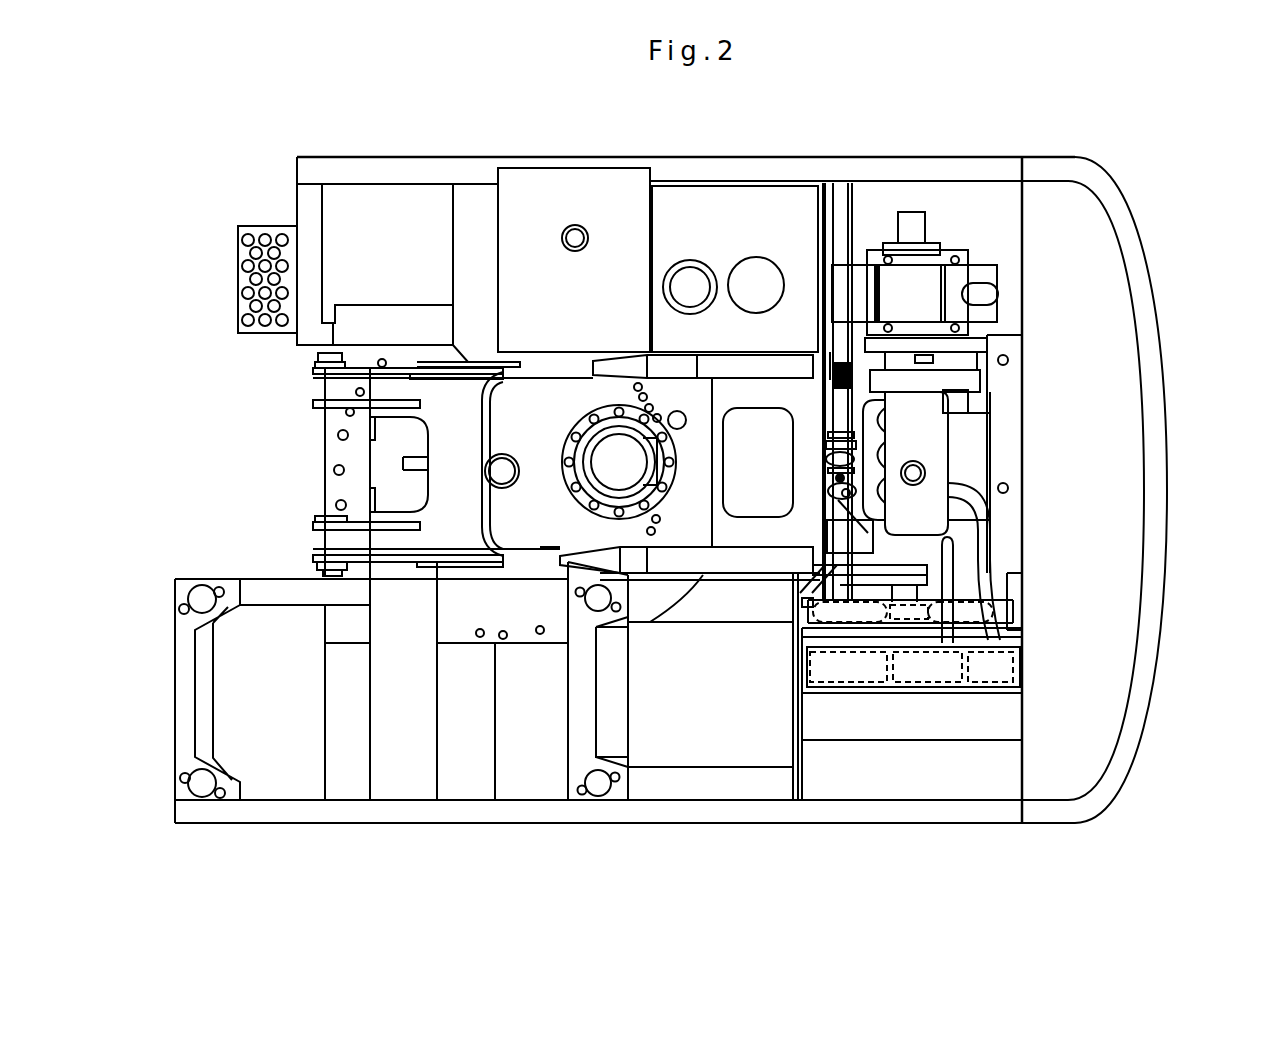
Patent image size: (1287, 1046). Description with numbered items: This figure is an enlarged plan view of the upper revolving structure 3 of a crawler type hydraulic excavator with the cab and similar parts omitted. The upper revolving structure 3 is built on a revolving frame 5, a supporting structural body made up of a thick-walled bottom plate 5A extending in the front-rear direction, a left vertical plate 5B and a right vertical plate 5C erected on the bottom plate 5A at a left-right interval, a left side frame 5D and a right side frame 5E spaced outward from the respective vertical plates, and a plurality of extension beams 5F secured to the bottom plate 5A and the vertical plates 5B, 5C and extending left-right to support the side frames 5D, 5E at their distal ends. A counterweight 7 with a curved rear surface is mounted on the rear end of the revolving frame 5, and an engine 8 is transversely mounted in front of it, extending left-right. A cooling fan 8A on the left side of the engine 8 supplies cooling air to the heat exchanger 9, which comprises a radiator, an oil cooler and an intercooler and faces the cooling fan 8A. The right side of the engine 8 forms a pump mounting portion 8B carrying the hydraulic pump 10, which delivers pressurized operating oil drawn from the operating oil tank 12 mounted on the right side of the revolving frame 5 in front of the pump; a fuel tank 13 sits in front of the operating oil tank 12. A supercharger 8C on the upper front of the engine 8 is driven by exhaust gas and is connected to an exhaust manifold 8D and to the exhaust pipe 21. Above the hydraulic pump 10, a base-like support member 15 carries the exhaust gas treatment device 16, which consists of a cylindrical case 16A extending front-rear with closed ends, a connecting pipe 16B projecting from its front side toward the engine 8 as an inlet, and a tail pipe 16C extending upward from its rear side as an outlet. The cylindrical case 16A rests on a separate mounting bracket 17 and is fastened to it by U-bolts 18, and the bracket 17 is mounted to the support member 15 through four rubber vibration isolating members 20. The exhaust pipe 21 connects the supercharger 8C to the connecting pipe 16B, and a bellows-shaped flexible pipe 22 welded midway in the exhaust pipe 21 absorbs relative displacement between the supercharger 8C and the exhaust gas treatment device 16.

The upper revolving structure 3 is at (644, 160).
The revolving frame 5 is at (540, 813).
The bottom plate 5A is at (362, 455).
The left vertical plate 5B is at (407, 556).
The right vertical plate 5C is at (407, 372).
The left side frame 5D is at (670, 813).
The right side frame 5E is at (483, 170).
The extension beam 5F is at (467, 250).
The counterweight 7 is at (1167, 512).
The engine 8 is at (975, 447).
The cooling fan 8A is at (930, 612).
The pump mounting portion 8B is at (945, 345).
The supercharger 8C is at (825, 460).
The exhaust manifold 8D is at (835, 510).
The heat exchanger 9 is at (925, 672).
The hydraulic pump 10 is at (908, 250).
The operating oil tank 12 is at (703, 220).
The fuel tank 13 is at (567, 193).
The support member 15 is at (848, 300).
The exhaust gas treatment device 16 is at (975, 275).
The cylindrical case 16A is at (928, 263).
The connecting pipe 16B is at (866, 297).
The tail pipe 16C is at (1000, 294).
The mounting bracket 17 is at (898, 257).
The U-bolt 18 is at (836, 300).
The vibration isolating member 20 is at (948, 263).
The exhaust pipe 21 is at (828, 345).
The flexible pipe 22 is at (835, 378).